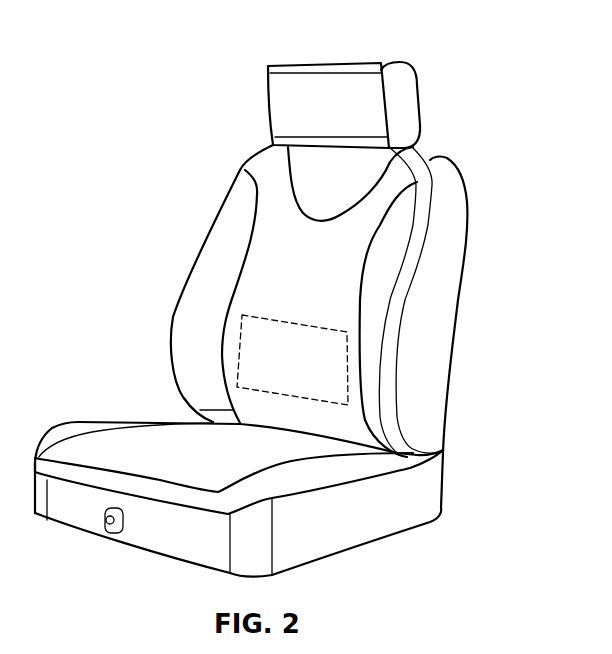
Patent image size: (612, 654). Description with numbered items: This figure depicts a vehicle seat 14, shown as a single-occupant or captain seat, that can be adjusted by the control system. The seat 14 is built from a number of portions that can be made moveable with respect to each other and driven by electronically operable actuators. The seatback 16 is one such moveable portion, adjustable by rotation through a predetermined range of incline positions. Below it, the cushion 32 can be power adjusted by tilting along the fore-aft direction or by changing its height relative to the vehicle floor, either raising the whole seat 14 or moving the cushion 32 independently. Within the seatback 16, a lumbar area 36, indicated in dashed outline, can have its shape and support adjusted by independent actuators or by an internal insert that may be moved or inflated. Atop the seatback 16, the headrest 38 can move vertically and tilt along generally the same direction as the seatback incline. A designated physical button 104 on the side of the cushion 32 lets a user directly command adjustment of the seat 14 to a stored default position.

The vehicle seat 14 is at (295, 309).
The seatback 16 is at (346, 284).
The cushion 32 is at (239, 509).
The lumbar area 36 is at (327, 373).
The headrest 38 is at (354, 94).
The button 104 is at (108, 524).